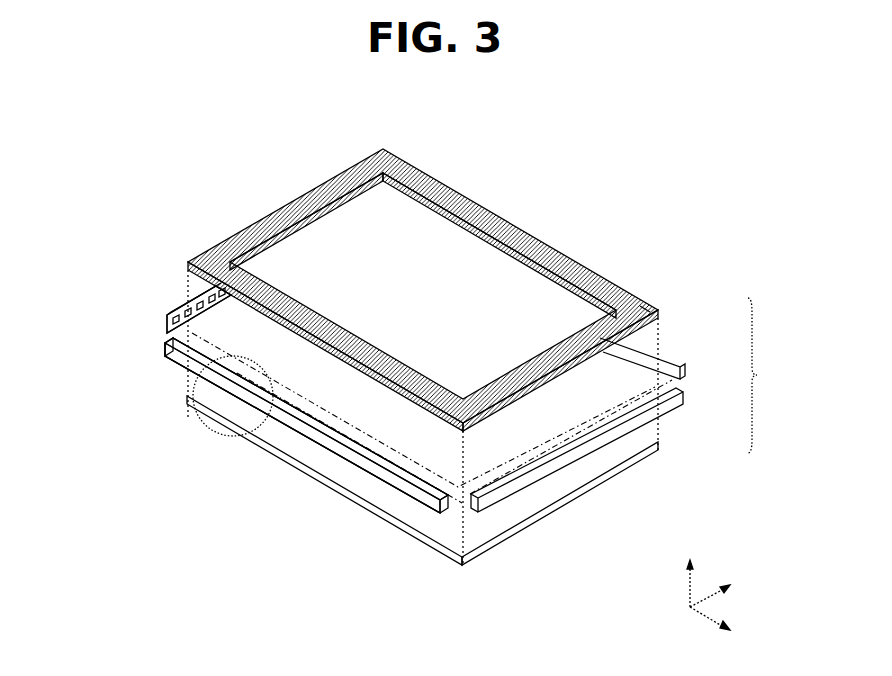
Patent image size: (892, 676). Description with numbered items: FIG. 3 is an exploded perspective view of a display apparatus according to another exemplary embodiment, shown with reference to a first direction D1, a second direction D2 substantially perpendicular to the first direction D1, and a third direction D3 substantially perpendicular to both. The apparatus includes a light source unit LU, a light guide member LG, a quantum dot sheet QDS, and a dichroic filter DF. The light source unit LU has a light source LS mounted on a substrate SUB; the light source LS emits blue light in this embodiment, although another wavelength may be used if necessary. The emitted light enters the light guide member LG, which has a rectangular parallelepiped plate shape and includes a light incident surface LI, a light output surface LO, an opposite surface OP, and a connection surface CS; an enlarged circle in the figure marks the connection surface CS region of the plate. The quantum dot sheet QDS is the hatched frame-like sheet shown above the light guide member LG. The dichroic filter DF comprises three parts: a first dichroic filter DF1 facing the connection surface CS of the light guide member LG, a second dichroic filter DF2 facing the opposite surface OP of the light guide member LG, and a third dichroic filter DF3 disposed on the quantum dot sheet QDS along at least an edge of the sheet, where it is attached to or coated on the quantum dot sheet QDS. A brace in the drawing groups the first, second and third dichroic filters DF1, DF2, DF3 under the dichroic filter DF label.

The quantum dot sheet QDS is at (552, 285).
The dichroic filter DF is at (766, 375).
The first dichroic filter DF1 is at (685, 368).
The second dichroic filter DF2 is at (652, 436).
The third dichroic filter DF3 is at (650, 300).
The light source unit LU is at (108, 285).
The light source LS is at (182, 306).
The substrate SUB is at (168, 324).
The light guide member LG is at (205, 488).
The light incident surface LI is at (167, 343).
The light output surface LO is at (267, 357).
The connection surface CS is at (225, 430).
The opposite surface OP is at (307, 438).
The first direction D1 is at (691, 573).
The second direction D2 is at (722, 592).
The third direction D3 is at (722, 624).